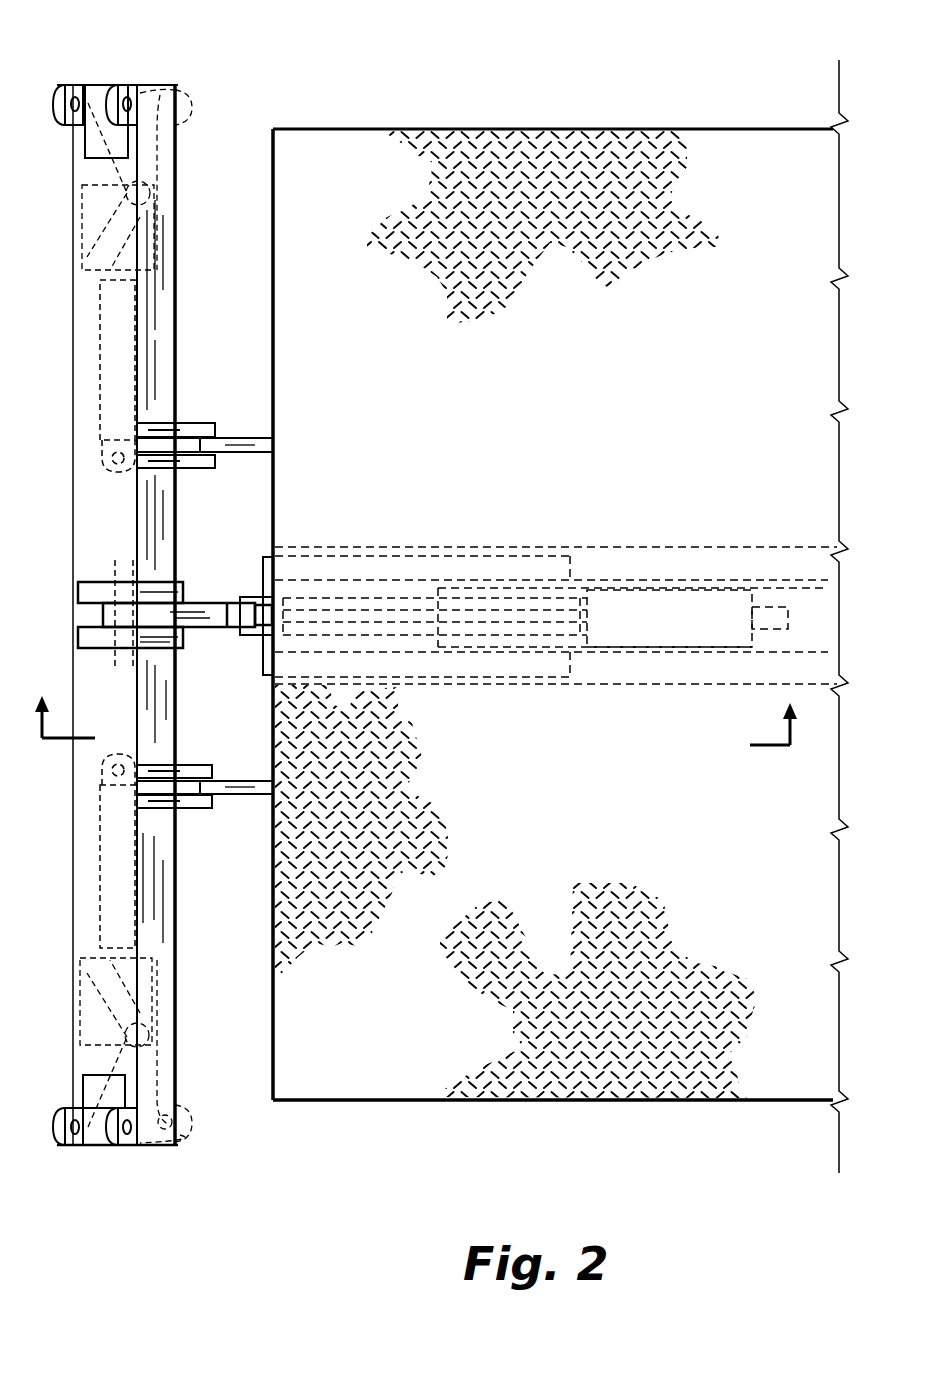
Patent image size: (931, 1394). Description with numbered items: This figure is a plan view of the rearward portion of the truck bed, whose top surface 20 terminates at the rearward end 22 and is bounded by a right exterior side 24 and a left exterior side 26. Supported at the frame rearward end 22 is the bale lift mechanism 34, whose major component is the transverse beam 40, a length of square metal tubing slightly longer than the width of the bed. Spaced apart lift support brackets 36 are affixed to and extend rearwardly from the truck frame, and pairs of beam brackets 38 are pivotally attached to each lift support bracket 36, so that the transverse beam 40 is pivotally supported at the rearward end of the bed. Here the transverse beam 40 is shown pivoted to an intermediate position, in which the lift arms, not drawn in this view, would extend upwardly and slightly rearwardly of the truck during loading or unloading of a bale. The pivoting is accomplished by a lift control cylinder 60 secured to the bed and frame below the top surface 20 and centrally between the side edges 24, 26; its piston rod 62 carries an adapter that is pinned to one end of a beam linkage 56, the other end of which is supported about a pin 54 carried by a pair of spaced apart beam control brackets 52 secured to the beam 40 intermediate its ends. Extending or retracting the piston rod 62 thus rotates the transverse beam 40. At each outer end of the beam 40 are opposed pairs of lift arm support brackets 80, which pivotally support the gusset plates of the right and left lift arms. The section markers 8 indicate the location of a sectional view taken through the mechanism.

The section line 8- 8 is at (412, 752).
The top surface 20 is at (616, 418).
The rearward end 22 is at (273, 247).
The right exterior side 24 is at (717, 1100).
The left exterior side 26 is at (660, 129).
The bale lift mechanism 34 is at (157, 1185).
The lift support brackets 36 is at (237, 438).
The beam brackets 38 is at (187, 423).
The transverse beam 40 is at (72, 872).
The beam control brackets 52 is at (95, 590).
The pin 54 is at (122, 576).
The beam linkage 56 is at (212, 615).
The lift control cylinder 60 is at (628, 613).
The piston rod 62 is at (366, 610).
The lift arm support brackets 80 is at (126, 86).